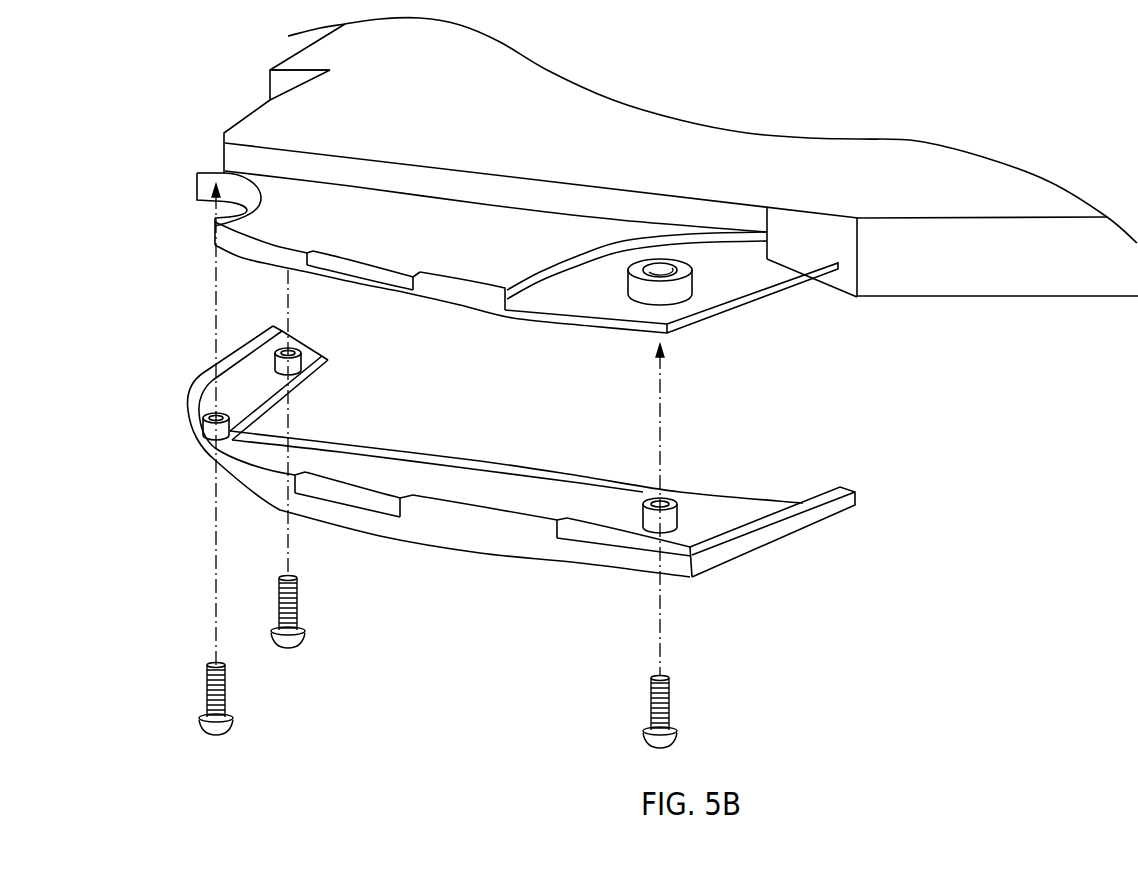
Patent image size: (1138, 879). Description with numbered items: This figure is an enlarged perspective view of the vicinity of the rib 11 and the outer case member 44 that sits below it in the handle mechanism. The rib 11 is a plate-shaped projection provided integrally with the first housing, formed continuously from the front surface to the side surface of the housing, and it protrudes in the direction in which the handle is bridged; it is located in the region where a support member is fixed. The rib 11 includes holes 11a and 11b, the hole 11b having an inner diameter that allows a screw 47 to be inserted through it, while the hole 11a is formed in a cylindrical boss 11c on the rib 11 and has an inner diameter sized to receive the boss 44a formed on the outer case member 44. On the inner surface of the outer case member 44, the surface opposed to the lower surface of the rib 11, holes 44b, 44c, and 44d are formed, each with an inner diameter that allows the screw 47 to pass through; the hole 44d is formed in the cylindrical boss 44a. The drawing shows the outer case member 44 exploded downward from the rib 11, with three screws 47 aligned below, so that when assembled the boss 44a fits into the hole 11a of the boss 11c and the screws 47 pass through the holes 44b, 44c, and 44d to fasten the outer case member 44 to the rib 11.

The rib 11 is at (400, 240).
The hole 11a is at (683, 261).
The hole 11b is at (268, 97).
The cylindrical boss 11c is at (676, 293).
The outer case member 44 is at (457, 550).
The boss 44a is at (680, 522).
The hole 44b is at (302, 353).
The hole 44c is at (203, 437).
The hole 44d is at (673, 501).
The screw 47 is at (305, 640).